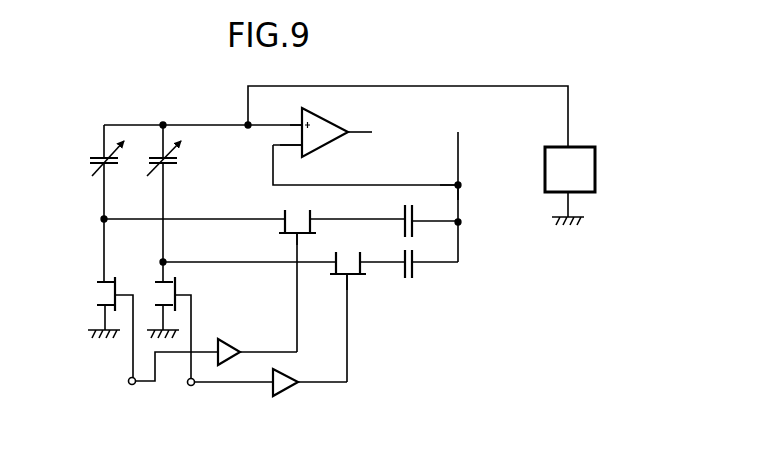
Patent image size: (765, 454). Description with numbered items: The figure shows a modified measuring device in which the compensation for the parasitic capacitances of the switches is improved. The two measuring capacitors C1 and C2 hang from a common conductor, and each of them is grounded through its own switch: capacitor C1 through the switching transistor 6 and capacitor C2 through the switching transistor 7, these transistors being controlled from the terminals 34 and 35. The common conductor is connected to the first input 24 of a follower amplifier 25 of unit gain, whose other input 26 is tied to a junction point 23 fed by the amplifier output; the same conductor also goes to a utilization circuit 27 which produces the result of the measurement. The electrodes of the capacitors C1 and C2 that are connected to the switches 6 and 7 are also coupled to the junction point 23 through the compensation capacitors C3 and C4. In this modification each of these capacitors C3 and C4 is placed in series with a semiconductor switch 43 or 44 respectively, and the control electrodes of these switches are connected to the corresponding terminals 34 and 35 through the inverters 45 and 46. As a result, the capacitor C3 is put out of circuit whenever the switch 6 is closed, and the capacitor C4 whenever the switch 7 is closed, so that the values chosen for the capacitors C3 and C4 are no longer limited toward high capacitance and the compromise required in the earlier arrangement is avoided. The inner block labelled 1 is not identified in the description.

The operational amplifier 1 is at (325, 132).
The switch 6 is at (103, 292).
The switch 7 is at (185, 288).
The junction point 23 is at (462, 188).
The first input 24 is at (300, 124).
The follower amplifier 25 is at (326, 127).
The other input 26 is at (299, 146).
The utilization circuit 27 is at (603, 142).
The terminal 34 is at (131, 384).
The terminal 35 is at (190, 385).
The switch 43 is at (301, 230).
The switch 44 is at (353, 276).
The inverter 45 is at (228, 346).
The inverter 46 is at (283, 386).
The capacitor C1 is at (100, 158).
The capacitor C2 is at (158, 166).
The capacitor C3 is at (413, 221).
The capacitor C4 is at (413, 268).